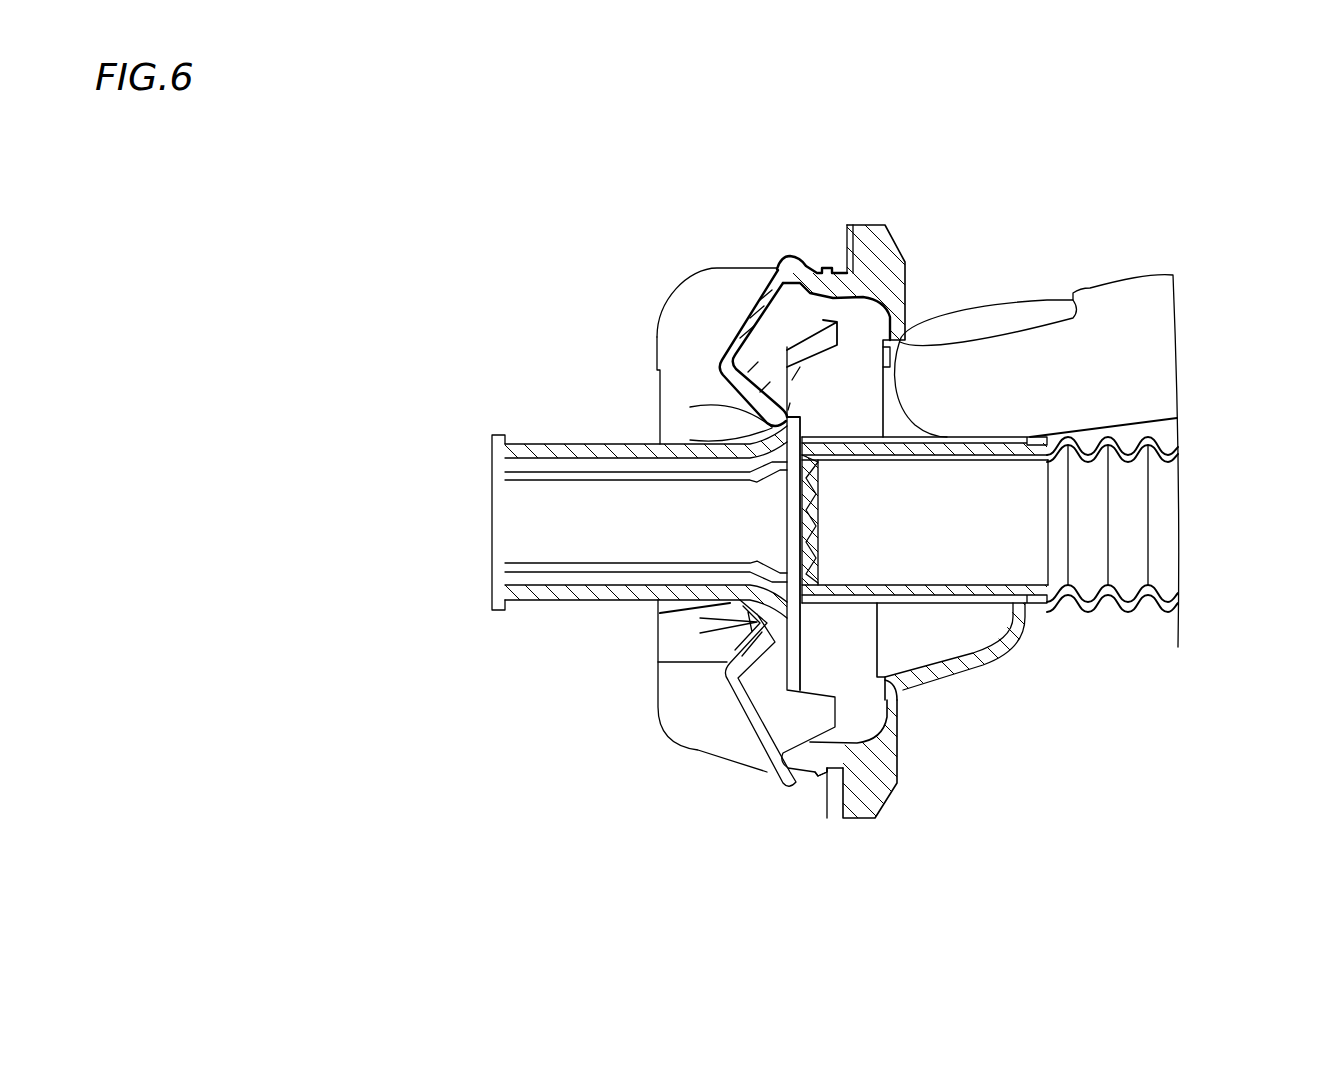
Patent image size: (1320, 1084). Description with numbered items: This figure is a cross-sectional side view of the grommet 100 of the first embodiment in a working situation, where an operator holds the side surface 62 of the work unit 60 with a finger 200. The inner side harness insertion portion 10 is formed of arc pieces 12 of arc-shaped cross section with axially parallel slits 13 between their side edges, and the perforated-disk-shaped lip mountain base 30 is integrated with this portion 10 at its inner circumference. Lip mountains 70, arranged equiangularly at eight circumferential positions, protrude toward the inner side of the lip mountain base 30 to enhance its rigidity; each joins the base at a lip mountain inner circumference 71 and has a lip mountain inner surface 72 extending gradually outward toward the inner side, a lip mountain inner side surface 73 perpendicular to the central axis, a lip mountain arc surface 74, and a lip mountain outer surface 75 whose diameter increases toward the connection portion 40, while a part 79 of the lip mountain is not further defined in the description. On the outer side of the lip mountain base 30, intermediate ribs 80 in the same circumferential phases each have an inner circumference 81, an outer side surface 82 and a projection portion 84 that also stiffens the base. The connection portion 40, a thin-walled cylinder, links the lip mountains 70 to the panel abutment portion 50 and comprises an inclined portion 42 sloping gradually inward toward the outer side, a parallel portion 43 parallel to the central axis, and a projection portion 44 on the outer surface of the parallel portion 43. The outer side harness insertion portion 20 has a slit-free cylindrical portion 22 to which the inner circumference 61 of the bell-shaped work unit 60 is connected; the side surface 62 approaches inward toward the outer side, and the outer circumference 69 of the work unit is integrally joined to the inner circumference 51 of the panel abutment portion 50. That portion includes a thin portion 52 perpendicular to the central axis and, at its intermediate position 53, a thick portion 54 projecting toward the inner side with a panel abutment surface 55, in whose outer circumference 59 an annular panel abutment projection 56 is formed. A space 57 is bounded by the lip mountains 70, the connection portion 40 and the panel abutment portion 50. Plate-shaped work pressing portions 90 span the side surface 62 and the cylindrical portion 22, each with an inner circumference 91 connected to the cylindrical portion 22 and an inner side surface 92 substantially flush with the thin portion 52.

The connector assembly 100 is at (576, 103).
The inner side harness insertion portion 10 is at (413, 470).
The arc pieces 12 is at (513, 533).
The slits 13 is at (542, 480).
The outer side harness insertion portion 20 is at (1046, 524).
The cylindrical portion 22 is at (1025, 503).
The lip mountain base 30 is at (765, 685).
The connection portion 40 is at (773, 105).
The inclined portion 42 is at (792, 258).
The parallel portion 43 is at (838, 276).
The projection portion 44 is at (826, 268).
The panel abutment portion 50 is at (1075, 898).
The inner circumference 51 is at (900, 697).
The thin portion 52 is at (893, 703).
The intermediate position 53 is at (887, 727).
The thick portion 54 is at (883, 763).
The panel abutment surface 55 is at (842, 792).
The panel abutment projection 56 is at (846, 738).
The space 57 is at (816, 776).
The outer circumference 59 is at (875, 828).
The work unit 60 is at (1160, 648).
The inner circumference 61 is at (1030, 610).
The side surface 62 is at (986, 658).
The outer circumference 69 is at (898, 694).
The lip mountains 70 is at (553, 232).
The lip mountain inner circumference 71 is at (765, 432).
The lip mountain inner surface 72 is at (765, 425).
The lip mountain inner side surface 73 is at (655, 362).
The lip mountain arc surface 74 is at (666, 301).
The lip mountain outer surface 75 is at (700, 270).
The seal hump 79 is at (775, 266).
The intermediate ribs 80 is at (1013, 205).
The inner circumference 81 is at (790, 403).
The outer side surface 82 is at (800, 367).
The projection portion 84 is at (823, 317).
The work pressing portions 90 is at (1265, 305).
The inner circumference 91 is at (940, 420).
The inner side surface 92 is at (885, 400).
The finger 200 is at (1130, 295).